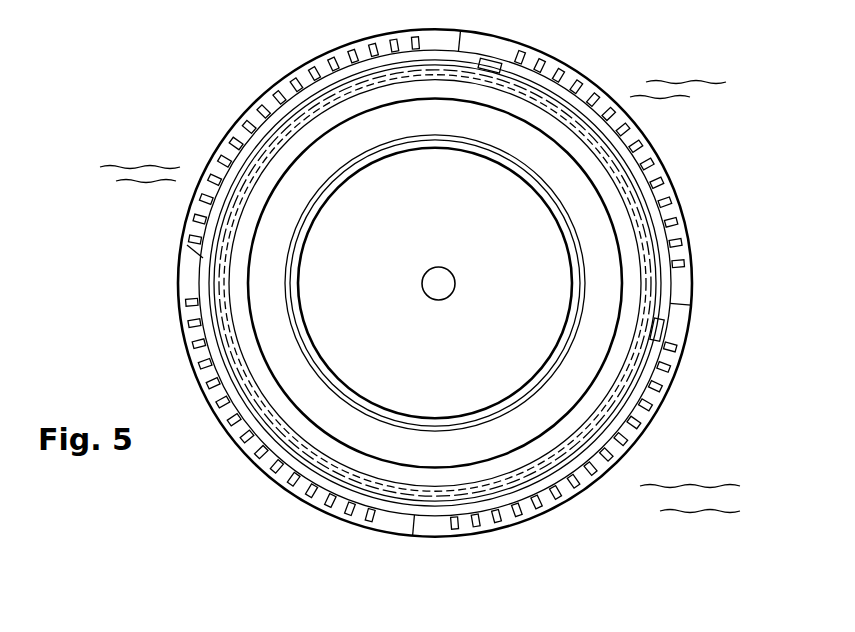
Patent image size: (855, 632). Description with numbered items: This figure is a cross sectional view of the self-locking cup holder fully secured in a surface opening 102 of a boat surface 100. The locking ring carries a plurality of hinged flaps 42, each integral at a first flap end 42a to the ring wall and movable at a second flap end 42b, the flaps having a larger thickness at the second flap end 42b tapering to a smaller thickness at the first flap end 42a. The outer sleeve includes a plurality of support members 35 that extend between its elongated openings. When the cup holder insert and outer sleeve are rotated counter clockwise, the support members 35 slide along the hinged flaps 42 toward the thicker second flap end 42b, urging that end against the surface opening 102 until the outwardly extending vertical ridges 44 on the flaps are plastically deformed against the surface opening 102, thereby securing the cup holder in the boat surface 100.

The boat surface 100 is at (178, 264).
The surface opening 102 is at (700, 122).
The support member 35 is at (190, 340).
The hinged flap 42 is at (316, 486).
The first flap end 42a is at (312, 85).
The second flap end 42b is at (142, 9).
The vertical ridges 44 is at (256, 108).